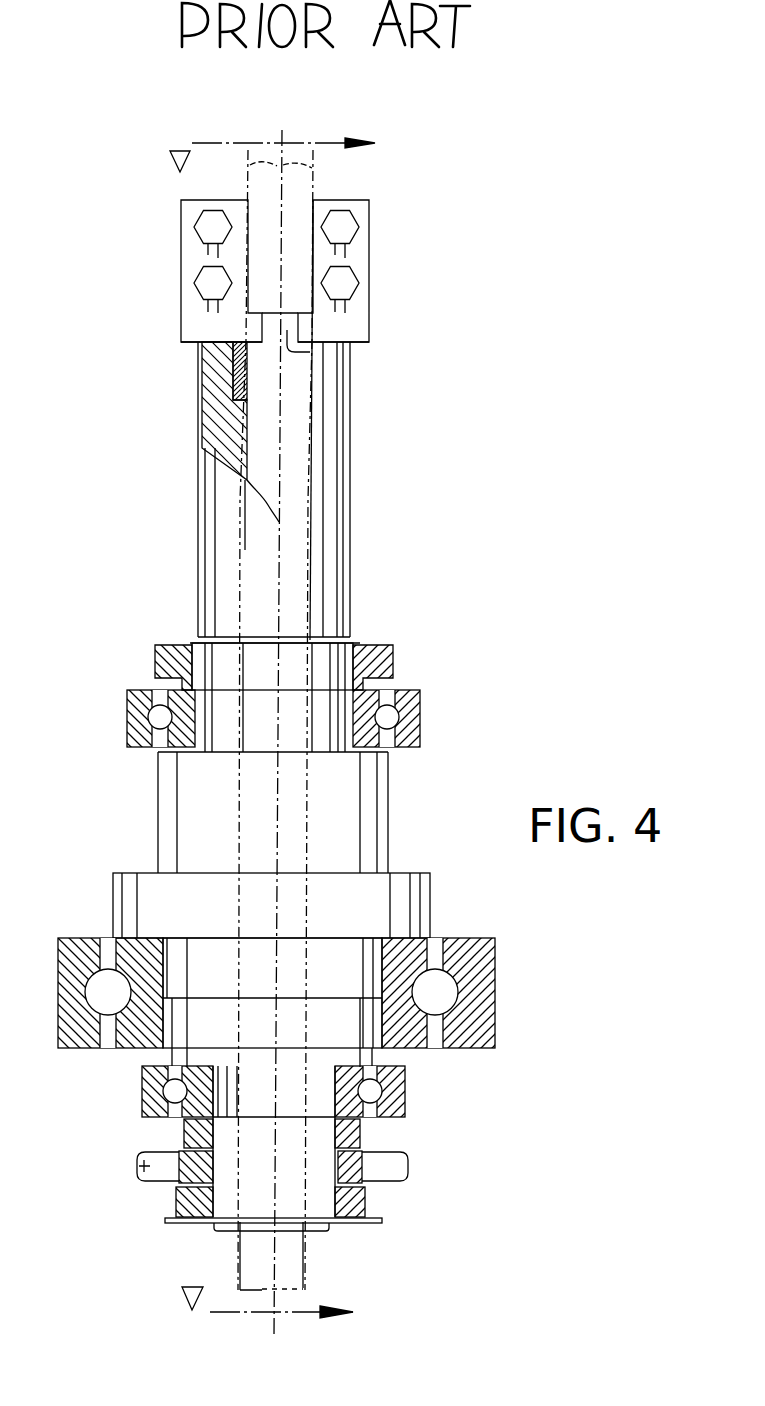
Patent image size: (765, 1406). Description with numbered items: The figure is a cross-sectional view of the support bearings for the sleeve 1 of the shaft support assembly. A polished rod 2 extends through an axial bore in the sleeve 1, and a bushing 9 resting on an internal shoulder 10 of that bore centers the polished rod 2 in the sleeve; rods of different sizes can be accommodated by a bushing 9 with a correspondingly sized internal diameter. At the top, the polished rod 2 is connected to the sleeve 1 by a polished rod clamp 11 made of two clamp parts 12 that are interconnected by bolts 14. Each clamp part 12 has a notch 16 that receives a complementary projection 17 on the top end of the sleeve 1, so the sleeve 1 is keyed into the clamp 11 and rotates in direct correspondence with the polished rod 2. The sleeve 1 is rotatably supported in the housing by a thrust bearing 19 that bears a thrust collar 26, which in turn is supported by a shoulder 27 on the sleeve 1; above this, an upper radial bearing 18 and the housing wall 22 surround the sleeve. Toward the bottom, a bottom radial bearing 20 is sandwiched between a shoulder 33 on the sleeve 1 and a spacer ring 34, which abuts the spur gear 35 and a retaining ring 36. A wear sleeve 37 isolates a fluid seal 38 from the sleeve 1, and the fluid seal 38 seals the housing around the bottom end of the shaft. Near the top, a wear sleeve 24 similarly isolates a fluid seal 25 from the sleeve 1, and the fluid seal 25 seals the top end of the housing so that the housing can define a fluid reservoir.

The sleeve 1 is at (200, 520).
The polished rod 2 is at (304, 1266).
The bushing 9 is at (240, 372).
The internal shoulder 10 is at (235, 412).
The polished rod clamp 11 is at (182, 200).
The clamp part 12 is at (190, 248).
The bolts 14 is at (213, 283).
The notch 16 is at (300, 332).
The projection 17 is at (287, 332).
The upper bearing 18 is at (415, 727).
The thrust bearing 19 is at (463, 945).
The bottom radial bearing 20 is at (402, 1120).
The housing 22 is at (172, 754).
The wear sleeve 24 is at (362, 645).
The fluid seal 25 is at (170, 645).
The thrust collar 26 is at (400, 877).
The shoulder 27 is at (385, 800).
The shoulder 33 is at (197, 1060).
The spacer ring 34 is at (180, 1135).
The spur gear 35 is at (137, 1162).
The retaining ring 36 is at (375, 1223).
The wear sleeve 37 is at (210, 1225).
The fluid seal 38 is at (365, 1205).